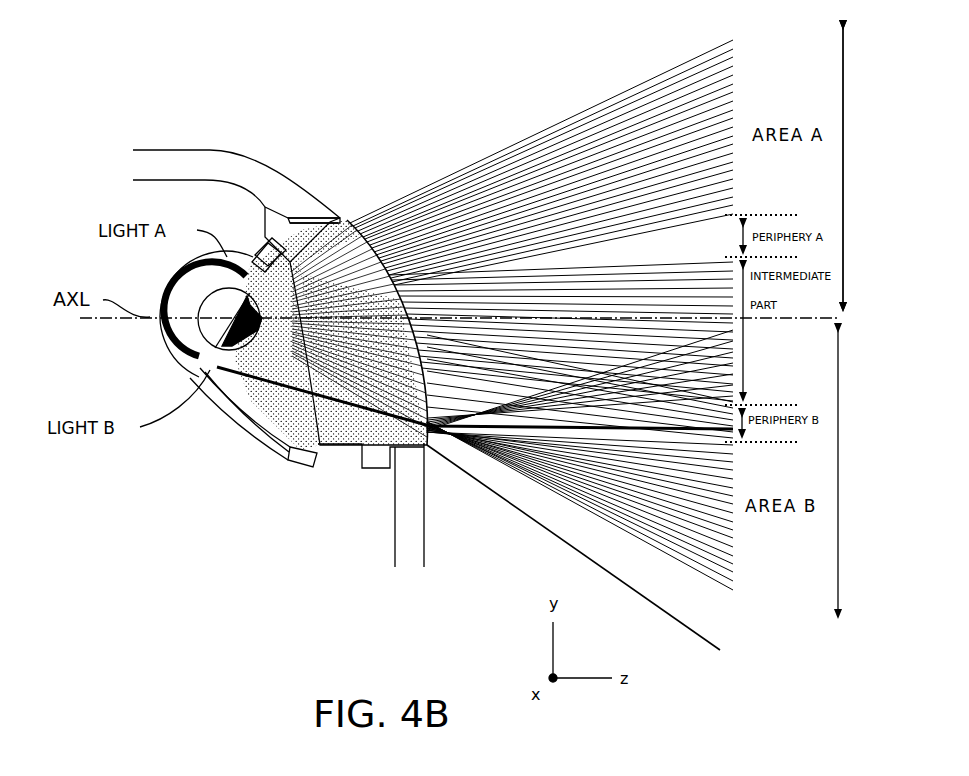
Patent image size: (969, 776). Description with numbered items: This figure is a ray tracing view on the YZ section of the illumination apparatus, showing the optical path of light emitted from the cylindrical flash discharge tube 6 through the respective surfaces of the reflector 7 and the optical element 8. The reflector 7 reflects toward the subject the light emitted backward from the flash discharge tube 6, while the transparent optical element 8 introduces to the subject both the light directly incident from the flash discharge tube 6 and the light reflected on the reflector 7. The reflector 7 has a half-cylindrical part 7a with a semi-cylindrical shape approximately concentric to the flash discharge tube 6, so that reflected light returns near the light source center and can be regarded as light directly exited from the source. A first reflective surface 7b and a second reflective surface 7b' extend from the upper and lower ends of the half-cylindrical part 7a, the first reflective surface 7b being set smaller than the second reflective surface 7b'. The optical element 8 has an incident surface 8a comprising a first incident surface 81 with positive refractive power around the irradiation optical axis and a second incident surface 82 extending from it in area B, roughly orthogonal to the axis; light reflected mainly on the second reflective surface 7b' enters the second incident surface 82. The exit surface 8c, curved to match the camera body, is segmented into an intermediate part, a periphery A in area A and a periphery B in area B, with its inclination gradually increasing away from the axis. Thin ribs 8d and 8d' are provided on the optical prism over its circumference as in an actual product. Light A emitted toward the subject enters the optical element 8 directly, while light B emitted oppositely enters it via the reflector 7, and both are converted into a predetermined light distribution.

The flash discharge tube 6 is at (187, 360).
The reflector 7 is at (197, 273).
The half-cylindrical part 7a is at (180, 340).
The first reflective surface 7b is at (251, 193).
The second reflective surface 7b' is at (221, 415).
The optical element 8 is at (323, 230).
The incident surface 8a is at (253, 430).
The exit surface 8c is at (387, 262).
The thin rib 8d is at (303, 177).
The thin rib 8d' is at (371, 505).
The first incident surface 81 is at (228, 258).
The second incident surface 82 is at (300, 458).